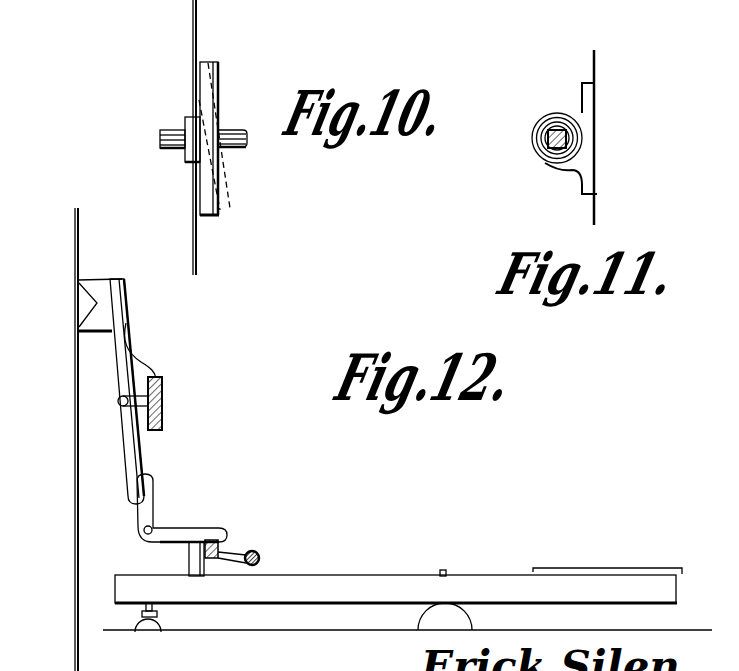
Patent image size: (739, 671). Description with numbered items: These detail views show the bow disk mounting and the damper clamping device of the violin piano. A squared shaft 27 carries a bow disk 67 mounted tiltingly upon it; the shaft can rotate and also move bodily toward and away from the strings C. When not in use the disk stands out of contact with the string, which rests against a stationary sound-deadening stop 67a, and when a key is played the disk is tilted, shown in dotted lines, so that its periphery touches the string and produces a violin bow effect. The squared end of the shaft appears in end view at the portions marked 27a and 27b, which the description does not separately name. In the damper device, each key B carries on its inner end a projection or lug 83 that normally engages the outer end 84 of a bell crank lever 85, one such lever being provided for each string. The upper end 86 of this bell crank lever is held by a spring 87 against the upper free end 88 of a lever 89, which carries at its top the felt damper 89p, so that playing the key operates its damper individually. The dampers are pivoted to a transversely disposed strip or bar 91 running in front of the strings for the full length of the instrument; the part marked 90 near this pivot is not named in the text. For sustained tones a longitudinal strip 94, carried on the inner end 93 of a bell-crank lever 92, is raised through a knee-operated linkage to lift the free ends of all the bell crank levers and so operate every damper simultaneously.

In FIG. 10, the shaft 27 is at (170, 133).
In FIG. 11, the shaft 27 is at (552, 157).
In FIG. 11, the shaft end square 27a is at (548, 140).
In FIG. 11, the bearing bracket 27b is at (578, 108).
In FIG. 10, the bow disk 67 is at (207, 103).
In FIG. 10, the sound-deadening stop 67a is at (192, 153).
In FIG. 10, the strings C is at (191, 232).
In FIG. 12, the strings C is at (76, 585).
In FIG. 12, the projection or lug 83 is at (193, 557).
In FIG. 12, the outer end of bell crank lever 84 is at (195, 530).
In FIG. 12, the bell crank lever 85 is at (153, 525).
In FIG. 12, the upper end of bell crank lever 86 is at (145, 485).
In FIG. 12, the spring 87 is at (132, 390).
In FIG. 12, the upper free end of lever 88 is at (130, 483).
In FIG. 12, the lever 89 is at (126, 352).
In FIG. 12, the felt damper 89p is at (98, 303).
In FIG. 12, the pin bar 90 is at (138, 382).
In FIG. 12, the transversely disposed strip or bar 91 is at (160, 394).
In FIG. 12, the bell-crank lever 92 is at (259, 556).
In FIG. 12, the inner end of bell-crank lever 93 is at (226, 554).
In FIG. 12, the longitudinal strip 94 is at (206, 577).
In FIG. 12, the keyboard key B is at (490, 578).